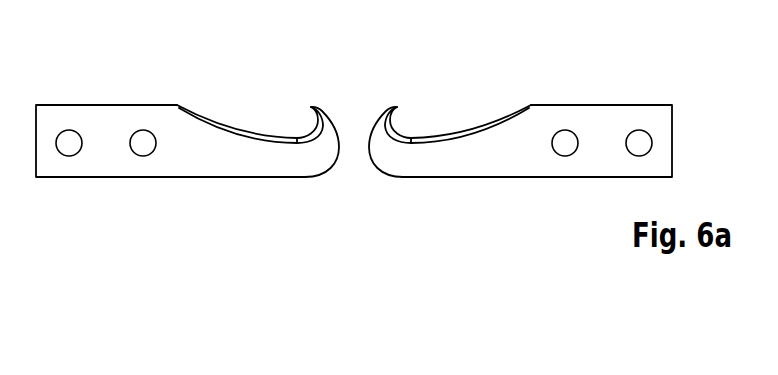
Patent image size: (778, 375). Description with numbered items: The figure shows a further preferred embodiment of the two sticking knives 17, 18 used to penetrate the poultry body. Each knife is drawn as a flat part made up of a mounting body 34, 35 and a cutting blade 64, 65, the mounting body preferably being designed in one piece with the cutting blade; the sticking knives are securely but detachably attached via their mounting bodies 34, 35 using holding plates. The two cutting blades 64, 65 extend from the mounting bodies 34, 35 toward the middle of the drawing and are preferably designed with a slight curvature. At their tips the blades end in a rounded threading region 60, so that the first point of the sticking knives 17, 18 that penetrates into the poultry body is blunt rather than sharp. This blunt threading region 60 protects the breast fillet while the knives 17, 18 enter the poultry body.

The sticking knife 17 is at (579, 89).
The sticking knife 18 is at (129, 90).
The mounting body 34 is at (636, 112).
The mounting body 35 is at (73, 115).
The threading region 60 is at (380, 128).
The cutting blade 64 is at (451, 129).
The cutting blade 65 is at (259, 129).